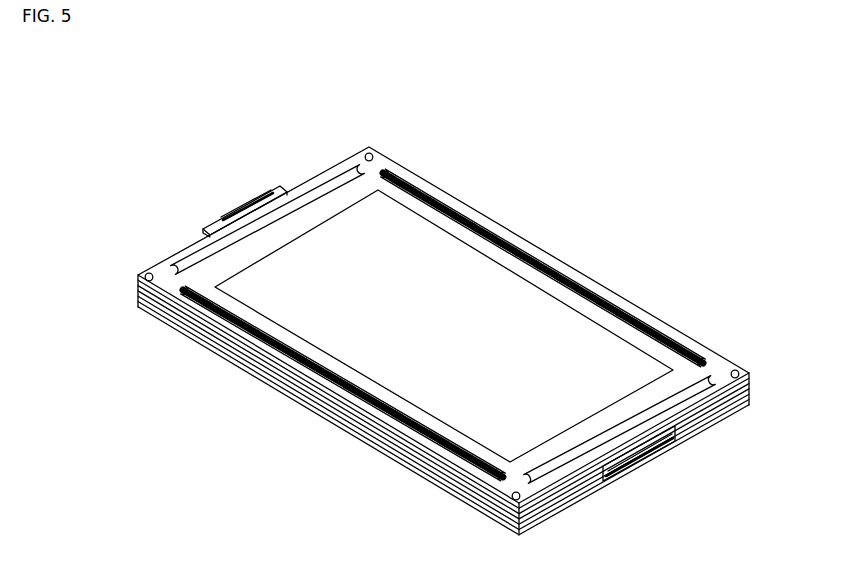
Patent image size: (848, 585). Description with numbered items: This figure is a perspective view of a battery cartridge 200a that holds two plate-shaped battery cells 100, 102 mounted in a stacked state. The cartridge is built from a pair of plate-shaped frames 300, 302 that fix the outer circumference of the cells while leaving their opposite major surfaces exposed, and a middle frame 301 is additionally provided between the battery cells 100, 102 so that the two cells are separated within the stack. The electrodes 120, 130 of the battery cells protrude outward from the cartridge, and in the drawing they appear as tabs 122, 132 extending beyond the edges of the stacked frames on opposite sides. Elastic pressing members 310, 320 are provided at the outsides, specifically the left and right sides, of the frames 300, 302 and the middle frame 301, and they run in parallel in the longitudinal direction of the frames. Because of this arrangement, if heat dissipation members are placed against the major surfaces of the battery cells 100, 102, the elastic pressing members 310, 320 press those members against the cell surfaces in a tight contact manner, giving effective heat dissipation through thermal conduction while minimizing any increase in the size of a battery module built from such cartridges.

The battery cartridge 200a is at (103, 109).
The plate-shaped battery cell 100 is at (410, 465).
The plate-shaped battery cell 102 is at (432, 490).
The electrode 120 is at (273, 193).
The first terminal tab 122 is at (230, 212).
The electrode 130 is at (653, 438).
The second terminal tab 132 is at (630, 468).
The plate-shaped frame 300 is at (443, 419).
The middle frame 301 is at (146, 303).
The plate-shaped frame 302 is at (350, 416).
The elastic pressing member 310 is at (452, 212).
The elastic pressing member 320 is at (228, 316).